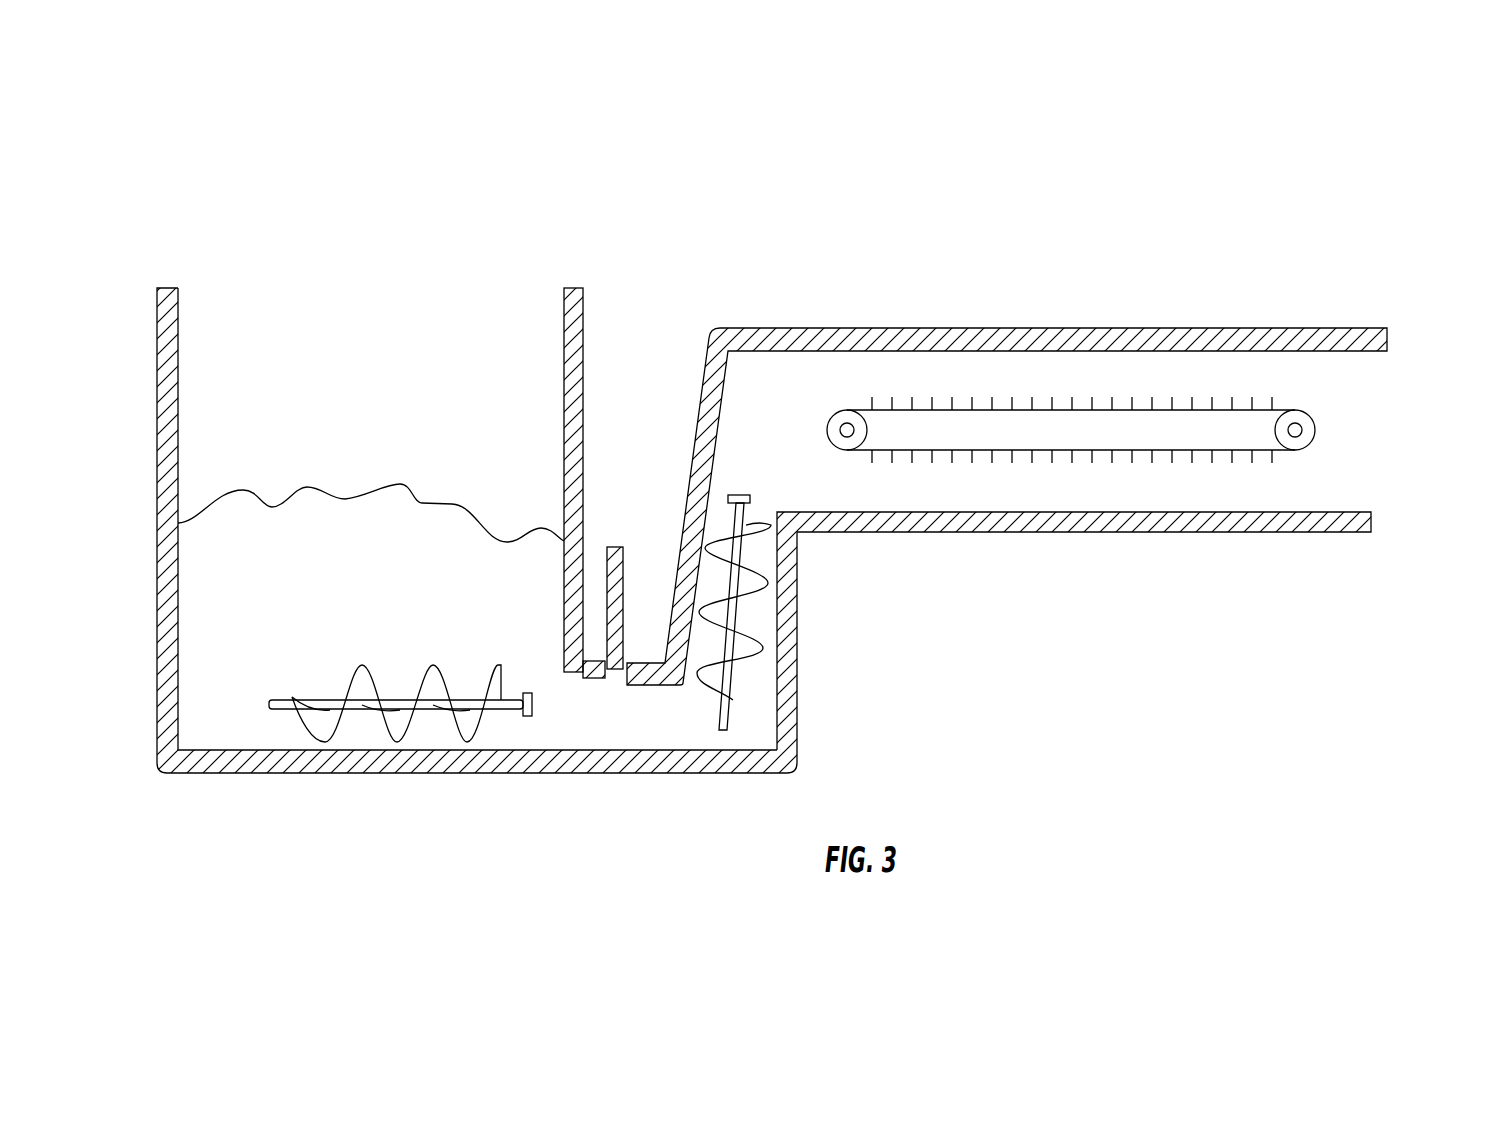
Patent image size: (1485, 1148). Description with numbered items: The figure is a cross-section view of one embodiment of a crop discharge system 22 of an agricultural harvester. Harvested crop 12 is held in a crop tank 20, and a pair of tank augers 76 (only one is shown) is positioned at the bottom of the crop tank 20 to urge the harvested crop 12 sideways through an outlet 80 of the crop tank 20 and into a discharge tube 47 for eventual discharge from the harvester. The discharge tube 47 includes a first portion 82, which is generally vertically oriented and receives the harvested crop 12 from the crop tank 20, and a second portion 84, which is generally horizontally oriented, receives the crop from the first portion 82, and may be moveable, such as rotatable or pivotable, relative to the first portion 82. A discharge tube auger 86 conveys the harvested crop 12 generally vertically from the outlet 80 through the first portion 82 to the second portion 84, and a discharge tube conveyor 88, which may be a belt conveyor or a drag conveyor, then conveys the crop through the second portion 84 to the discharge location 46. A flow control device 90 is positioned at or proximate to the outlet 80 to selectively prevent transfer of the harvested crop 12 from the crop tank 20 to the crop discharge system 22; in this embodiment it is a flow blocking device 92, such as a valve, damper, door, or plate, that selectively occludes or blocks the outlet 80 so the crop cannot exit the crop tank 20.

The harvested crop 12 is at (344, 593).
The crop tank 20 is at (157, 462).
The crop discharge system 22 is at (293, 236).
The discharge location 46 is at (1422, 370).
The discharge tube 47 is at (1058, 240).
The tank auger 76 is at (462, 728).
The outlet 80 is at (612, 724).
The first portion 82 is at (798, 610).
The second portion 84 is at (1204, 328).
The discharge tube auger 86 is at (699, 613).
The discharge tube conveyor 88 is at (918, 392).
The flow control device 90 is at (608, 512).
The flow blocking device 92 is at (619, 546).